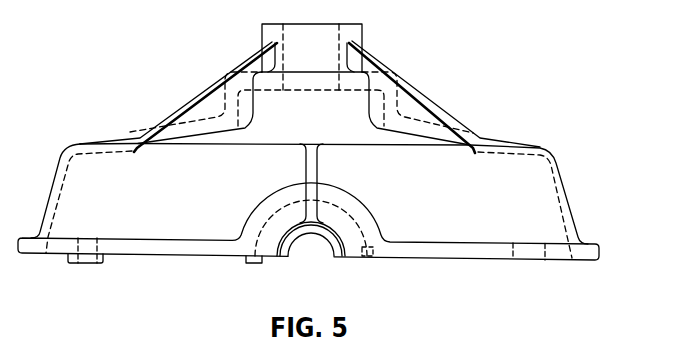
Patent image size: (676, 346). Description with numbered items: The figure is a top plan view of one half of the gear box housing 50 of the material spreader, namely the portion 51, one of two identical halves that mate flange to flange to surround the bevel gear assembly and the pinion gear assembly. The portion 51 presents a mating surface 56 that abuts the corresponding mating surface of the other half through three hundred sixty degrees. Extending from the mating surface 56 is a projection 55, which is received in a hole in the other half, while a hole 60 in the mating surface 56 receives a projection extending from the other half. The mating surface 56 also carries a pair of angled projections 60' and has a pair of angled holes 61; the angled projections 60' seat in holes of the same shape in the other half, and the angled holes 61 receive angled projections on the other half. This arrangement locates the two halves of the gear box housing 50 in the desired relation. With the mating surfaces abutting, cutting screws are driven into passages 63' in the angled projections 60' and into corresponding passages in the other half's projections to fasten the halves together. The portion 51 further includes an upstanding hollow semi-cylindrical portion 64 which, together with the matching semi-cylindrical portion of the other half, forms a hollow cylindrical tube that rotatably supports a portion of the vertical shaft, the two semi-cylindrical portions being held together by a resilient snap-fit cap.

The gear box housing 50 is at (570, 132).
The portion of the gear box housing 51 is at (573, 213).
The projection 55 is at (251, 264).
The mating surface 56 is at (442, 261).
The hole 60 is at (385, 271).
The angled projections 60' is at (107, 273).
The angled holes 61 is at (545, 259).
The passages 63' is at (107, 240).
The upstanding hollow semi-cylindrical portion 64 is at (337, 236).